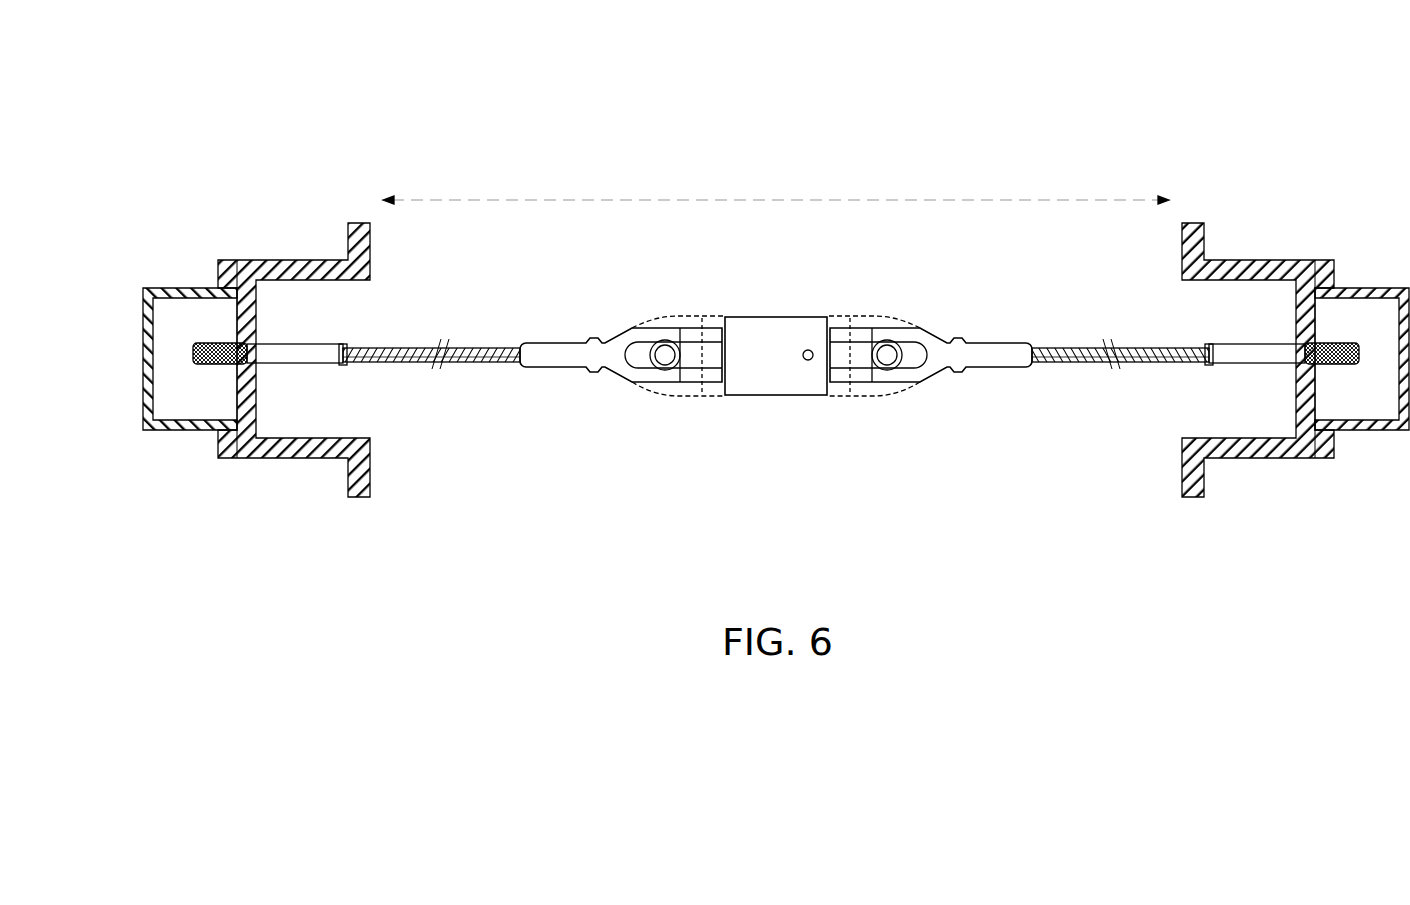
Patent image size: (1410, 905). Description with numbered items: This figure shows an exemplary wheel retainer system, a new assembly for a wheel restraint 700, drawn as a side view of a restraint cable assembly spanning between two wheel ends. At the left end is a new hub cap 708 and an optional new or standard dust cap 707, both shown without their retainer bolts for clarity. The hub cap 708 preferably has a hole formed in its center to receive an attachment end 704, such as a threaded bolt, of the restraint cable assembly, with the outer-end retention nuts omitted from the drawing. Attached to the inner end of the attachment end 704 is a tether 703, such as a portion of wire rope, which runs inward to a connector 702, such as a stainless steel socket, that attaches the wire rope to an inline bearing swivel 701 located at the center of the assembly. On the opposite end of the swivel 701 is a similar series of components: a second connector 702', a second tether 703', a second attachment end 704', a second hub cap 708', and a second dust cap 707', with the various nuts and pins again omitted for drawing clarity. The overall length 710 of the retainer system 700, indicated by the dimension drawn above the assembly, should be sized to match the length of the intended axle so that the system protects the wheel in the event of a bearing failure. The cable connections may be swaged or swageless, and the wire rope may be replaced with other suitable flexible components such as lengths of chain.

The wheel restraint assembly 700 is at (796, 60).
The inline bearing swivel 701 is at (776, 414).
The connector 702 is at (617, 400).
The connector 702' is at (931, 404).
The tether 703 is at (431, 320).
The tether 703' is at (1120, 320).
The attachment end 704 is at (301, 381).
The attachment end 704' is at (1242, 381).
The dust cap 707 is at (294, 390).
The dust cap 707' is at (1258, 391).
The hub cap 708 is at (190, 411).
The hub cap 708' is at (1362, 412).
The overall length 710 is at (776, 188).